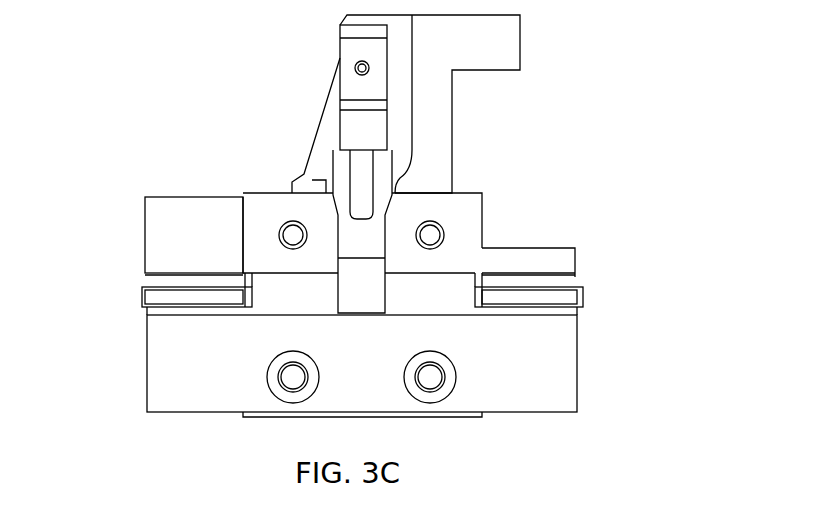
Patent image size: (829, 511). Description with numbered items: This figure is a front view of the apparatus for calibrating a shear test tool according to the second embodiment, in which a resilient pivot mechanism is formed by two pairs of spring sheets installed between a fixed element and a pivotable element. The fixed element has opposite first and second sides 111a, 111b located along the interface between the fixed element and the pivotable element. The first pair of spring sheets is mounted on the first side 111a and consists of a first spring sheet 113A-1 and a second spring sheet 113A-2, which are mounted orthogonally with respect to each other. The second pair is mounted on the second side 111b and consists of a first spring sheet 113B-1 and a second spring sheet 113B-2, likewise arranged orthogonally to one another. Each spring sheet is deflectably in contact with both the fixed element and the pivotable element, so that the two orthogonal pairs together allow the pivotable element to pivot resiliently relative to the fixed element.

The first side 111a is at (165, 187).
The second side 111b is at (537, 242).
The first spring sheet 113A-1 is at (155, 298).
The second spring sheet 113A-2 is at (278, 212).
The first spring sheet 113B-1 is at (553, 292).
The second spring sheet 113B-2 is at (457, 213).